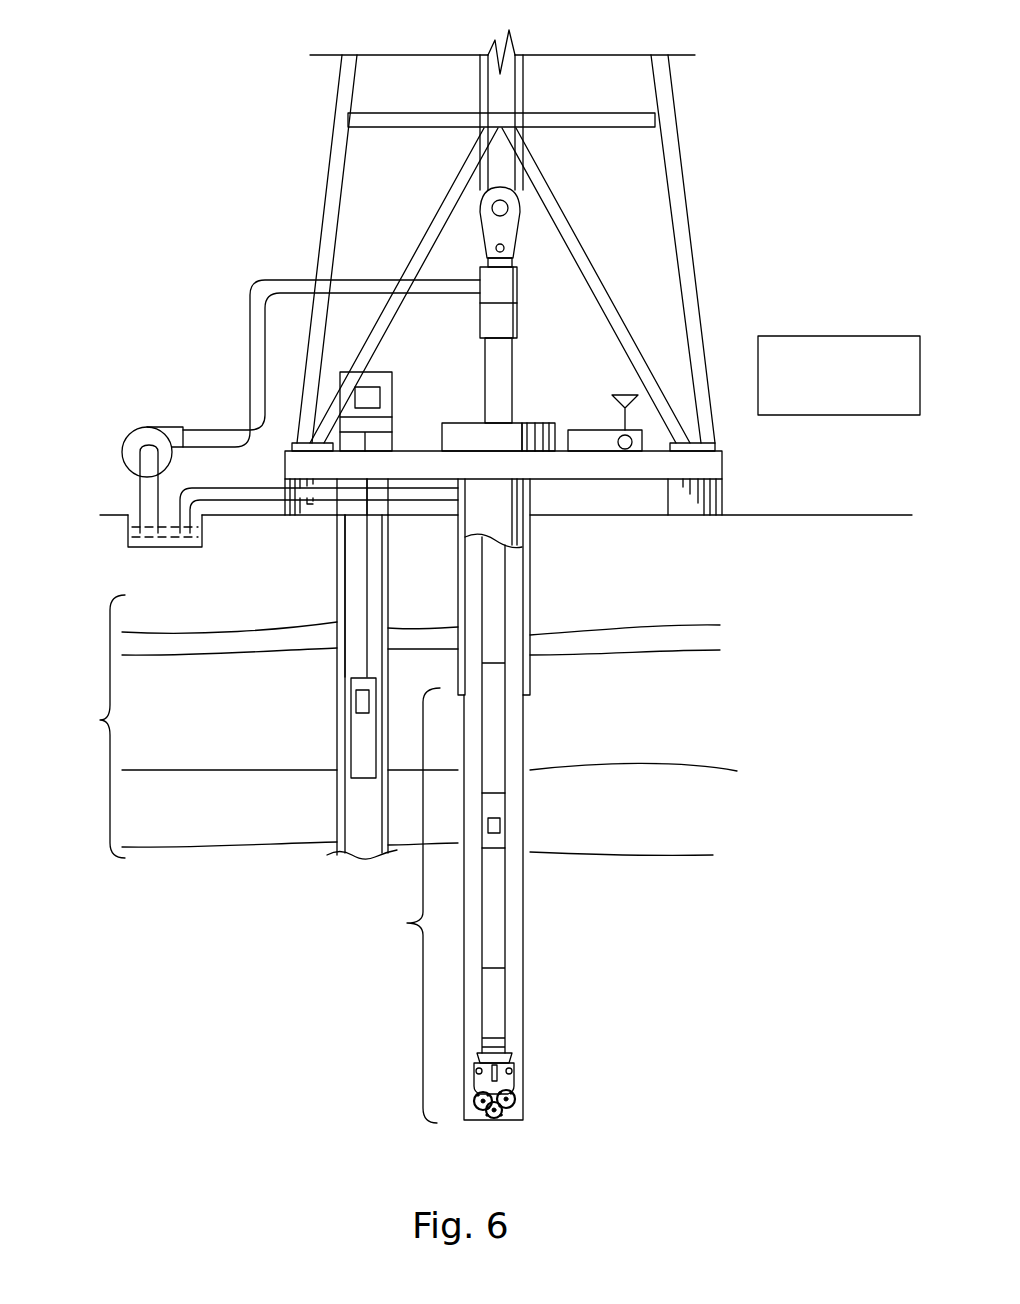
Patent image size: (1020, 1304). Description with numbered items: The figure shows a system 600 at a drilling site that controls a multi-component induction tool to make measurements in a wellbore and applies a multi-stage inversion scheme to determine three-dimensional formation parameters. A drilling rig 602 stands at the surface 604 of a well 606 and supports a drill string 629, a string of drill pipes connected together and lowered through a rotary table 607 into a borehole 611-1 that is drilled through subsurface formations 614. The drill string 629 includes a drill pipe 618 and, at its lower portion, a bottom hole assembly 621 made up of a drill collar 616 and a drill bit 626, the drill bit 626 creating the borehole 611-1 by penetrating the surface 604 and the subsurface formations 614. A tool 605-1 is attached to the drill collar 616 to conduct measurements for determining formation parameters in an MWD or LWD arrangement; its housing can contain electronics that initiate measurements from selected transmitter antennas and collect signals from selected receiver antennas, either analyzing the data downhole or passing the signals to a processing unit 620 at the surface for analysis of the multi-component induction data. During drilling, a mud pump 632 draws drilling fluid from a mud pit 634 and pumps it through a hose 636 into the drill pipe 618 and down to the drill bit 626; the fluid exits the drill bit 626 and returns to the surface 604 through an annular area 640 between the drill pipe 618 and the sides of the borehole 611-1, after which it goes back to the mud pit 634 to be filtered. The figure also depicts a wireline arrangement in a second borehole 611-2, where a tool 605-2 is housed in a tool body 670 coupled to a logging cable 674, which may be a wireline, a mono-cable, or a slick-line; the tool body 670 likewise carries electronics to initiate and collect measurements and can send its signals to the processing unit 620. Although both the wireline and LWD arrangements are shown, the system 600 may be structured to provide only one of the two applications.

The system 600 is at (252, 90).
The drilling rig 602 is at (680, 155).
The surface 604 is at (753, 515).
The tool 605-1 is at (500, 823).
The tool 605-2 is at (363, 697).
The well 606 is at (540, 508).
The rotary table 607 is at (472, 422).
The borehole 611-1 is at (520, 635).
The borehole 611-2 is at (337, 622).
The subsurface formations 614 is at (391, 720).
The drill collar 616 is at (578, 891).
The drill pipe 618 is at (508, 710).
The processing unit 620 is at (828, 335).
The bottom hole assembly 621 is at (519, 905).
The drill bit 626 is at (513, 1082).
The drill string 629 is at (512, 570).
The mud pump 632 is at (157, 428).
The mud pit 634 is at (133, 515).
The hose 636 is at (248, 353).
The annular area 640 is at (515, 748).
The tool body 670 is at (295, 723).
The logging cable 674 is at (365, 577).